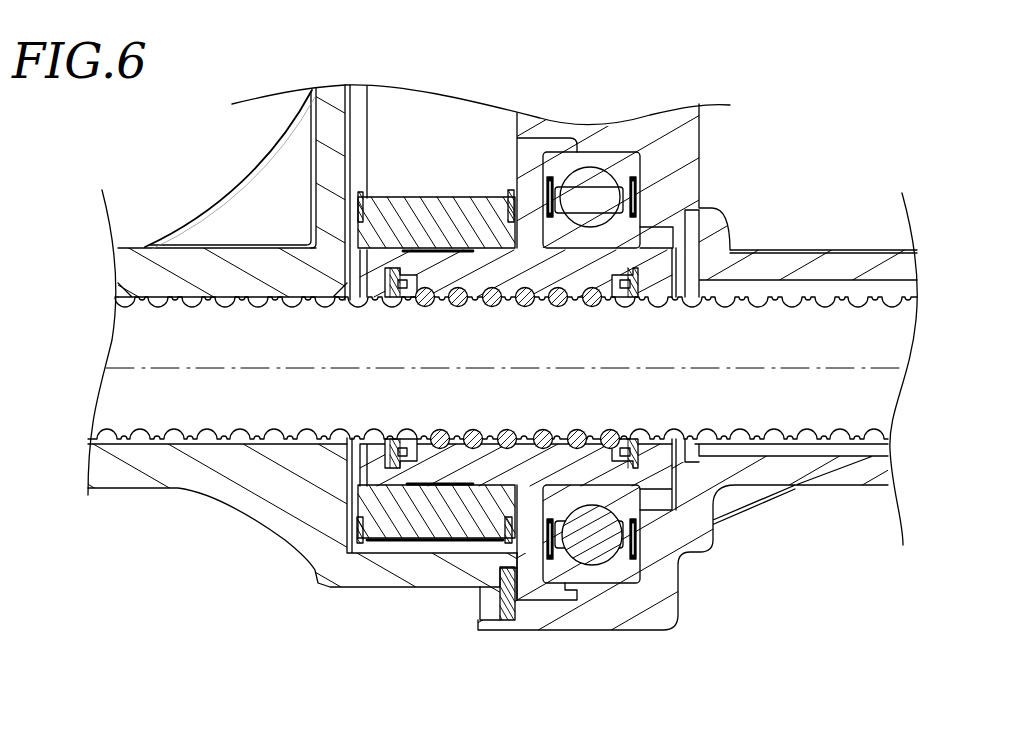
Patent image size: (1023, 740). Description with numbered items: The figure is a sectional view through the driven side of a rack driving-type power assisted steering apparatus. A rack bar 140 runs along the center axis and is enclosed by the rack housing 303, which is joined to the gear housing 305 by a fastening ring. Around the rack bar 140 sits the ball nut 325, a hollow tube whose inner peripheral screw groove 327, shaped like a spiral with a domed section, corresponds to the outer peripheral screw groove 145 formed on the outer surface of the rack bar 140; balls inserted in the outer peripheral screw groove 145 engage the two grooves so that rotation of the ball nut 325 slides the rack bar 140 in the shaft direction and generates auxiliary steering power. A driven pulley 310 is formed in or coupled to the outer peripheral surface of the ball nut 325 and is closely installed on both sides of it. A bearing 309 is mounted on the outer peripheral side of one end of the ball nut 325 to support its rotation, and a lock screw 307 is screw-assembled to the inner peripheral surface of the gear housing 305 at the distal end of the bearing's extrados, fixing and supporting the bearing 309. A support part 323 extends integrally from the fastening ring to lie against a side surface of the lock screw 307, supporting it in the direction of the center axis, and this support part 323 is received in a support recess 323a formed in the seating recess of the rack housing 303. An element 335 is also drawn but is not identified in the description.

The rack bar 140 is at (752, 323).
The outer peripheral screw groove 145 is at (862, 307).
The rack housing 303 is at (178, 470).
The gear housing 305 is at (695, 532).
The lock screw 307 is at (543, 590).
The bearing 309 is at (622, 570).
The driven pulley 310 is at (404, 228).
The support part 323 is at (503, 588).
The support recess 323a is at (500, 583).
The ball nut 325 is at (590, 268).
The inner peripheral screw groove 327 is at (567, 293).
The shield 335 is at (367, 133).